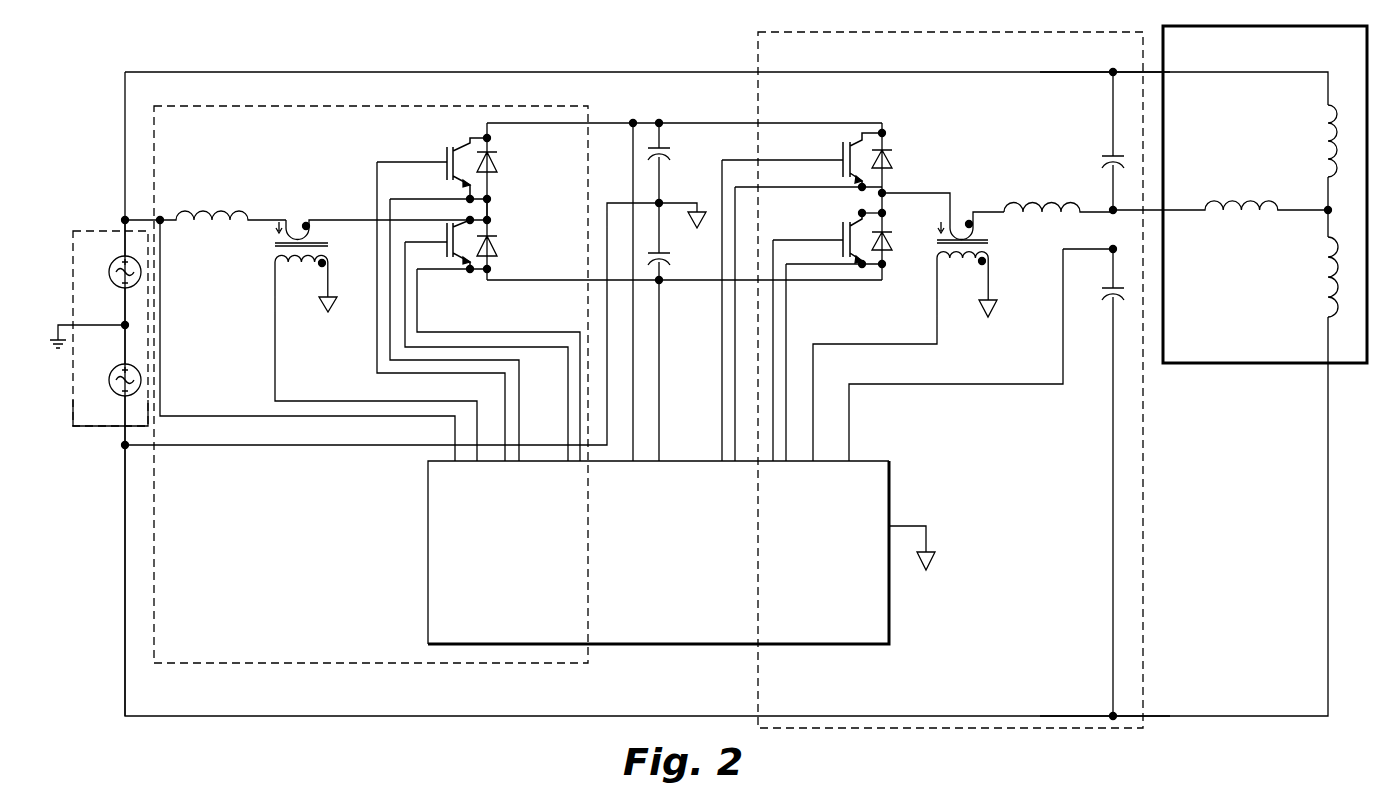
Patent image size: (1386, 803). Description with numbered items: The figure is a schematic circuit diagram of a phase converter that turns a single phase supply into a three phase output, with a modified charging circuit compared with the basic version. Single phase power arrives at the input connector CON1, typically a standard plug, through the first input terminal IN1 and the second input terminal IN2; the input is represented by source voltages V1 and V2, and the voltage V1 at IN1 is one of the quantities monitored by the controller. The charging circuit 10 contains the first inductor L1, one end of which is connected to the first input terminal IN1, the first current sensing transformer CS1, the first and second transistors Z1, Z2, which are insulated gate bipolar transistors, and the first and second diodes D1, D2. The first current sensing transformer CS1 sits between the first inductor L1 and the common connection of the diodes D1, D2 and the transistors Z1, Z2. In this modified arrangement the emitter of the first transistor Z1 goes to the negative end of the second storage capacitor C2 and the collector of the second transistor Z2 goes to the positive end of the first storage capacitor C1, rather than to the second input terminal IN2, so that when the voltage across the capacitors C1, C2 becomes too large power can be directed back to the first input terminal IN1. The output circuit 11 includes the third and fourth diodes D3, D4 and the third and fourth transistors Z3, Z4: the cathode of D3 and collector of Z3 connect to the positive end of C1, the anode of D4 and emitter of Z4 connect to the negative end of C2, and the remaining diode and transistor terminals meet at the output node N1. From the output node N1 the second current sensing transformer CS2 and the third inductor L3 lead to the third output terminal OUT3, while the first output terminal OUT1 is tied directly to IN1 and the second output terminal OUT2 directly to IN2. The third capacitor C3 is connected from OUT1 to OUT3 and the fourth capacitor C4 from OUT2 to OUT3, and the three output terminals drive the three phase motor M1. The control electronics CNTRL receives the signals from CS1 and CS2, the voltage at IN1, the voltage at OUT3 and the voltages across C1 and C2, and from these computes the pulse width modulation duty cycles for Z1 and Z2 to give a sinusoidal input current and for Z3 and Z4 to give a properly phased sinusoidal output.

The charging circuit 10 is at (573, 106).
The output circuit 11 is at (768, 33).
The first inductor L1 is at (222, 206).
The first current sensing transformer CS1 is at (381, 324).
The first transistor Z1 is at (486, 340).
The second transistor Z2 is at (441, 299).
The first diode D1 is at (505, 171).
The second diode D2 is at (505, 250).
The first storage capacitor C1 is at (678, 163).
The second storage capacitor C2 is at (676, 332).
The third transistor Z3 is at (802, 297).
The fourth transistor Z4 is at (817, 332).
The third diode D3 is at (902, 168).
The fourth diode D4 is at (902, 246).
The output node N1 is at (889, 216).
The second current sensing transformer CS2 is at (923, 327).
The third inductor L3 is at (1058, 193).
The third capacitor C3 is at (1096, 141).
The fourth capacitor C4 is at (1100, 482).
The three phase motor M1 is at (1265, 194).
The control electronics CNTRL is at (681, 552).
The voltage at IN1 V1 is at (120, 283).
The AC voltage source V2 is at (120, 372).
The input connector CON1 is at (103, 215).
The first input terminal IN1 is at (110, 328).
The second input terminal IN2 is at (110, 413).
The first output terminal OUT1 is at (1101, 85).
The second output terminal OUT2 is at (1097, 699).
The third output terminal OUT3 is at (1184, 220).